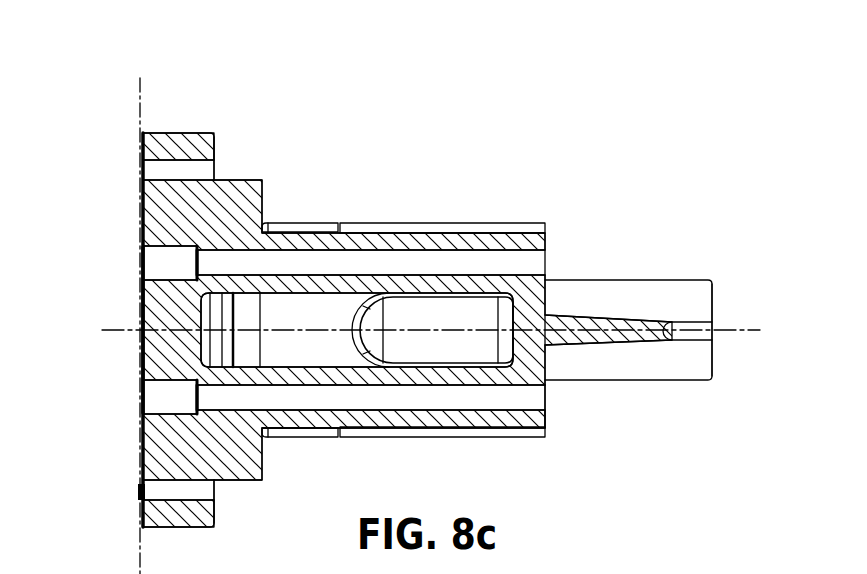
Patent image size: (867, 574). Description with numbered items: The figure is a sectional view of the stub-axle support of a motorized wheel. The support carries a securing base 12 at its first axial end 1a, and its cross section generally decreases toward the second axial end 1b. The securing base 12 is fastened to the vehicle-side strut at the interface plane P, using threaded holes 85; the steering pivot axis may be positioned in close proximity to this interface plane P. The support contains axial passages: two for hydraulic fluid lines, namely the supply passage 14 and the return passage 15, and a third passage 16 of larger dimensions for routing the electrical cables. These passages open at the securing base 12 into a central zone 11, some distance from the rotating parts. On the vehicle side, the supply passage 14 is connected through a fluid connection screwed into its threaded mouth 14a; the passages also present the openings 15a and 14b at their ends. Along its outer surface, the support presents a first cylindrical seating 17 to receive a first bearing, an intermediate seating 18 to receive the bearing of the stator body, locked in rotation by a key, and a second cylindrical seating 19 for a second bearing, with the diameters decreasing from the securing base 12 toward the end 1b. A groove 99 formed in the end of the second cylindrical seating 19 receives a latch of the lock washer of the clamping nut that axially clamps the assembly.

The first axial end 1a is at (124, 198).
The second axial end 1b is at (720, 308).
The central zone 11 is at (101, 243).
The securing base 12 is at (166, 112).
The supply passage 14 is at (492, 393).
The threaded mouth 14a is at (159, 413).
The bore end 14b is at (538, 411).
The return passage 15 is at (494, 264).
The upper annular groove 15a is at (151, 250).
The third passage 16 is at (250, 350).
The first cylindrical seating 17 is at (298, 224).
The intermediate seating 18 is at (413, 222).
The second cylindrical seating 19 is at (615, 279).
The threaded holes 85 is at (139, 491).
The groove 99 is at (693, 336).
The interface plane P is at (137, 100).